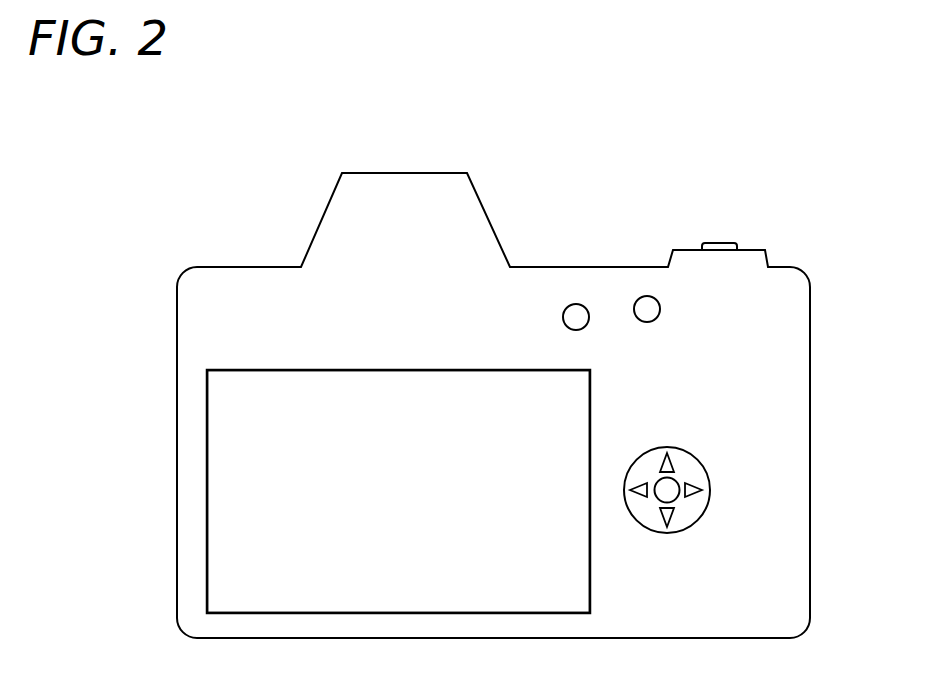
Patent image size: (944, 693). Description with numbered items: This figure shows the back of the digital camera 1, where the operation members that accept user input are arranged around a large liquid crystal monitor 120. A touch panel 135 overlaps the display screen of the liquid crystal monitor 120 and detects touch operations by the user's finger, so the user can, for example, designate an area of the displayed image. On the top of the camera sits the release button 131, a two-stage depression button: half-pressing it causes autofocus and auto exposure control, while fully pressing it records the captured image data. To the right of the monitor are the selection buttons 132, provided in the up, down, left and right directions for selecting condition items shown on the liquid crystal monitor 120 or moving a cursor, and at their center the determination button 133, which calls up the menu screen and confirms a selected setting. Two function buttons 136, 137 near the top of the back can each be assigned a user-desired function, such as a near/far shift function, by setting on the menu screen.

The digital camera 1 is at (249, 165).
The liquid crystal monitor 120 is at (242, 368).
The touch panel 135 is at (242, 492).
The release button 131 is at (722, 242).
The selection buttons 132 is at (692, 483).
The determination button 133 is at (674, 500).
The function button 136 is at (578, 303).
The function button 137 is at (649, 295).